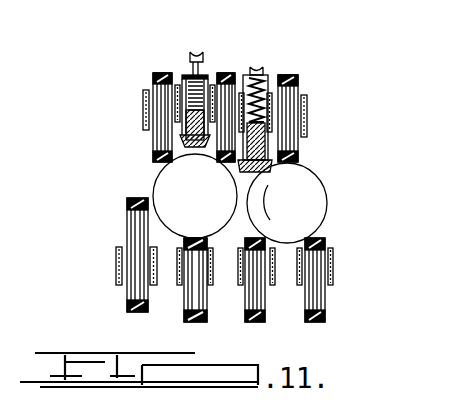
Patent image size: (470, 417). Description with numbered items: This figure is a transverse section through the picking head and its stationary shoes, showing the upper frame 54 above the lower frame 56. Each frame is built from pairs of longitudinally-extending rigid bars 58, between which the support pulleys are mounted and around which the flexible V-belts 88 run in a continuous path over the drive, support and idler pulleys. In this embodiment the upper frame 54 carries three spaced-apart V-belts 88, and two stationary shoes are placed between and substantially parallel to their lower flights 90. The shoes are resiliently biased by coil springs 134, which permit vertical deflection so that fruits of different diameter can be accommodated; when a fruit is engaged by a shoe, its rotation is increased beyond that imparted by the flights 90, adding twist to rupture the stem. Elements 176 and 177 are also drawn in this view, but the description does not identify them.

The flexible V-belt 88 is at (225, 78).
The coil springs 134 is at (162, 79).
The longitudinally-extending rigid bars 58 is at (178, 124).
The upper frame 54 is at (306, 122).
The spring-loaded piston 177 is at (190, 135).
The flights 90 is at (158, 162).
The piston flange 176 is at (191, 153).
The lower frame 56 is at (344, 241).